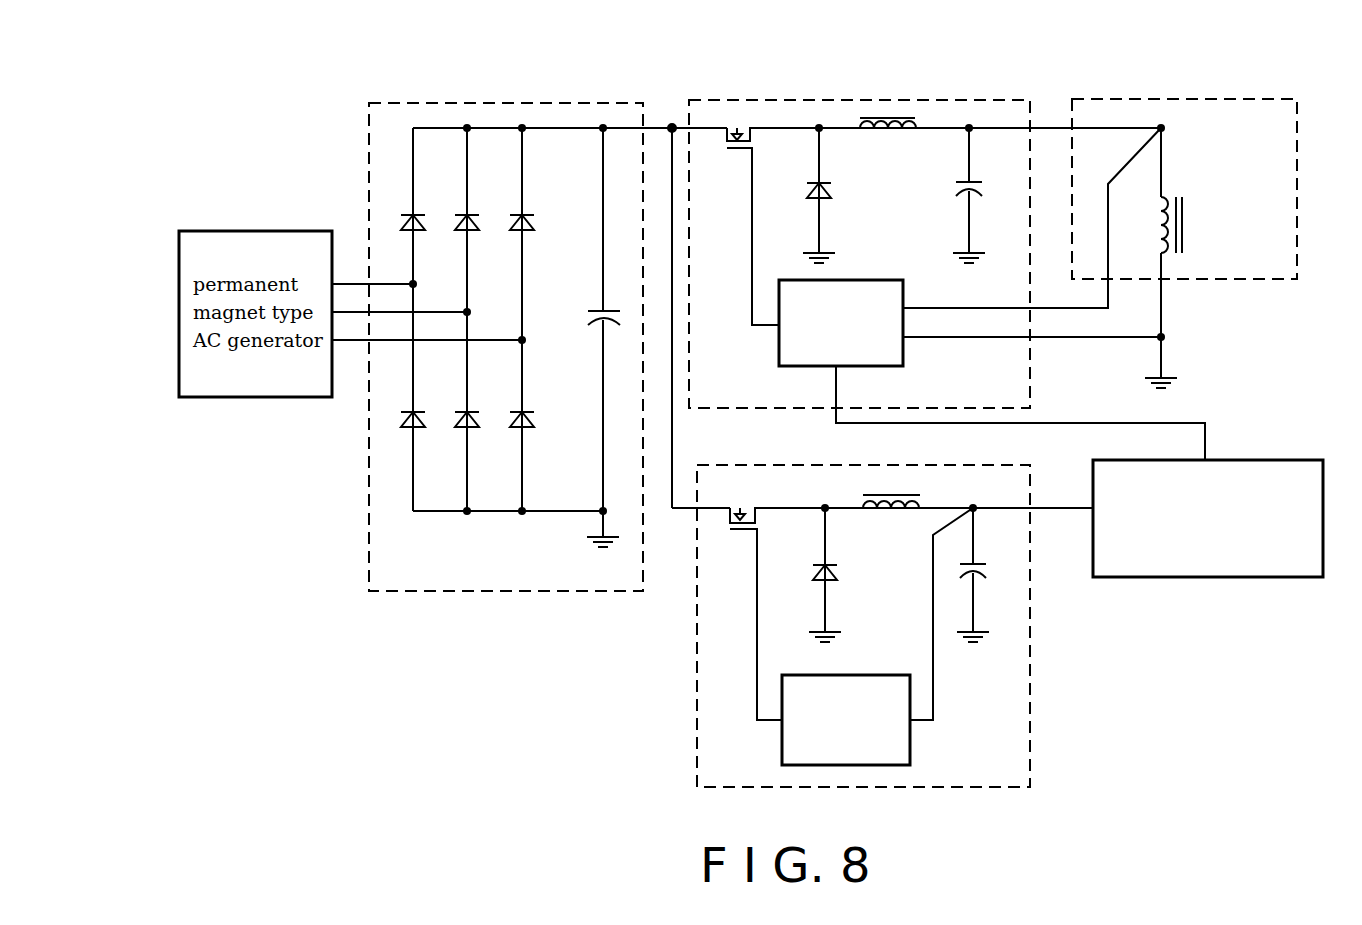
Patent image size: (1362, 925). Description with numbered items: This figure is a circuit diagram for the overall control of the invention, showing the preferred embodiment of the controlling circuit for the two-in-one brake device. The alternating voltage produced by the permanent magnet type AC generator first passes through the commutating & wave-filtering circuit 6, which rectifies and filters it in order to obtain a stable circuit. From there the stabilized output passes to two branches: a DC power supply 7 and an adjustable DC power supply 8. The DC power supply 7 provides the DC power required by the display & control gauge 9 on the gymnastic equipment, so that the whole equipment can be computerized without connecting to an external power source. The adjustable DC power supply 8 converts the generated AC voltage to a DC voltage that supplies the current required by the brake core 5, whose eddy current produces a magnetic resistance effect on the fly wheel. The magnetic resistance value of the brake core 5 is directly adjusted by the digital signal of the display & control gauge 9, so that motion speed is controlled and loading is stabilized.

The brake core 5 is at (1287, 150).
The commutating & wave-filtering circuit 6 is at (486, 573).
The DC power supply 7 is at (712, 687).
The adjustable DC power supply 8 is at (780, 110).
The display & control gauge 9 is at (1207, 577).